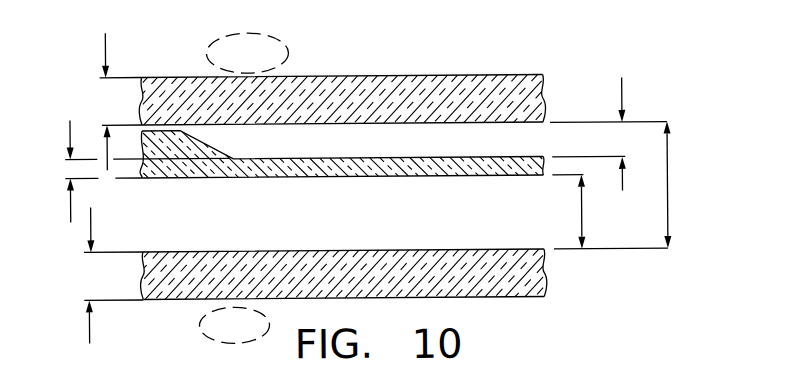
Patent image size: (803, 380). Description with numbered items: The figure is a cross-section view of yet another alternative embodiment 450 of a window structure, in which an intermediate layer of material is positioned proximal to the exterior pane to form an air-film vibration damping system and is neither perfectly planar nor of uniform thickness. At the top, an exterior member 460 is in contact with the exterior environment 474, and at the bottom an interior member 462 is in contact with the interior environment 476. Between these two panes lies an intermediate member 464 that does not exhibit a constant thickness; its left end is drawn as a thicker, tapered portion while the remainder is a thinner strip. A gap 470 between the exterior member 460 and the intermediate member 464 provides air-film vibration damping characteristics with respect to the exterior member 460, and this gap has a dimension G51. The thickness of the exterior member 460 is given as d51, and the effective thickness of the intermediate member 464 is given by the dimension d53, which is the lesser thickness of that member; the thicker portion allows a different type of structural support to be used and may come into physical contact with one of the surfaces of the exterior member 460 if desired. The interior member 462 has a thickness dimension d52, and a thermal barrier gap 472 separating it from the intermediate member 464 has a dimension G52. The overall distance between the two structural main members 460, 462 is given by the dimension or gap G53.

The alternative embodiment of a window structure 450 is at (548, 60).
The exterior member 460 is at (340, 113).
The interior member 462 is at (340, 288).
The intermediate member 464 is at (329, 178).
The gap 470 is at (525, 138).
The thermal barrier gap 472 is at (525, 236).
The exterior environment 474 is at (247, 53).
The interior environment 476 is at (234, 325).
The thickness of the exterior member d51 is at (105, 46).
The thickness dimension of the interior member d52 is at (88, 336).
The effective thickness of the intermediate member d53 is at (70, 213).
The gap dimension G51 is at (623, 92).
The thermal barrier gap dimension G52 is at (582, 217).
The overall distance between the main members G53 is at (668, 186).